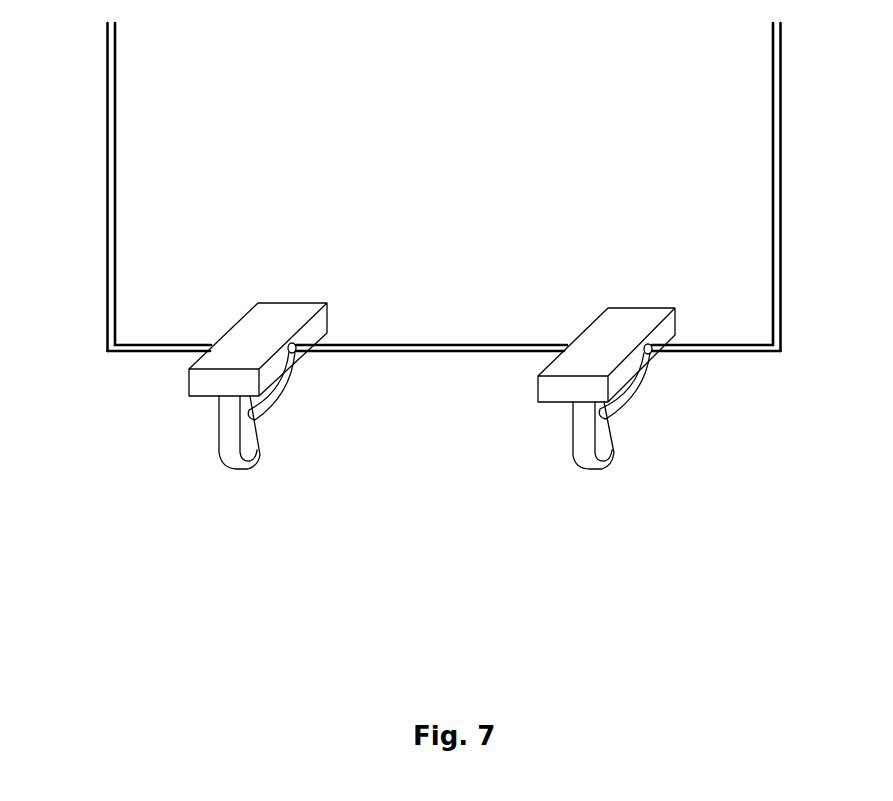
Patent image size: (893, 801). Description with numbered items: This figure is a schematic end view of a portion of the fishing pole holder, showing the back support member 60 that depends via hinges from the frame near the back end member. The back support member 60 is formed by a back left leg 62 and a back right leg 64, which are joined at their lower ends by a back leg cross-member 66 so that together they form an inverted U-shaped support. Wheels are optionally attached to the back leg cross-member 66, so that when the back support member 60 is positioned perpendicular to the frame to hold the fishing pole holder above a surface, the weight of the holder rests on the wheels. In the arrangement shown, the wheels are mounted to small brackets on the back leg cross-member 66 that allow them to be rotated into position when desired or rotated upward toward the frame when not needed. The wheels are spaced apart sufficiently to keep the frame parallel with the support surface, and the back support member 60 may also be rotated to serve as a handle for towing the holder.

The back support member 60 is at (427, 211).
The back left leg 62 is at (107, 74).
The back right leg 64 is at (783, 80).
The back leg cross-member 66 is at (432, 344).